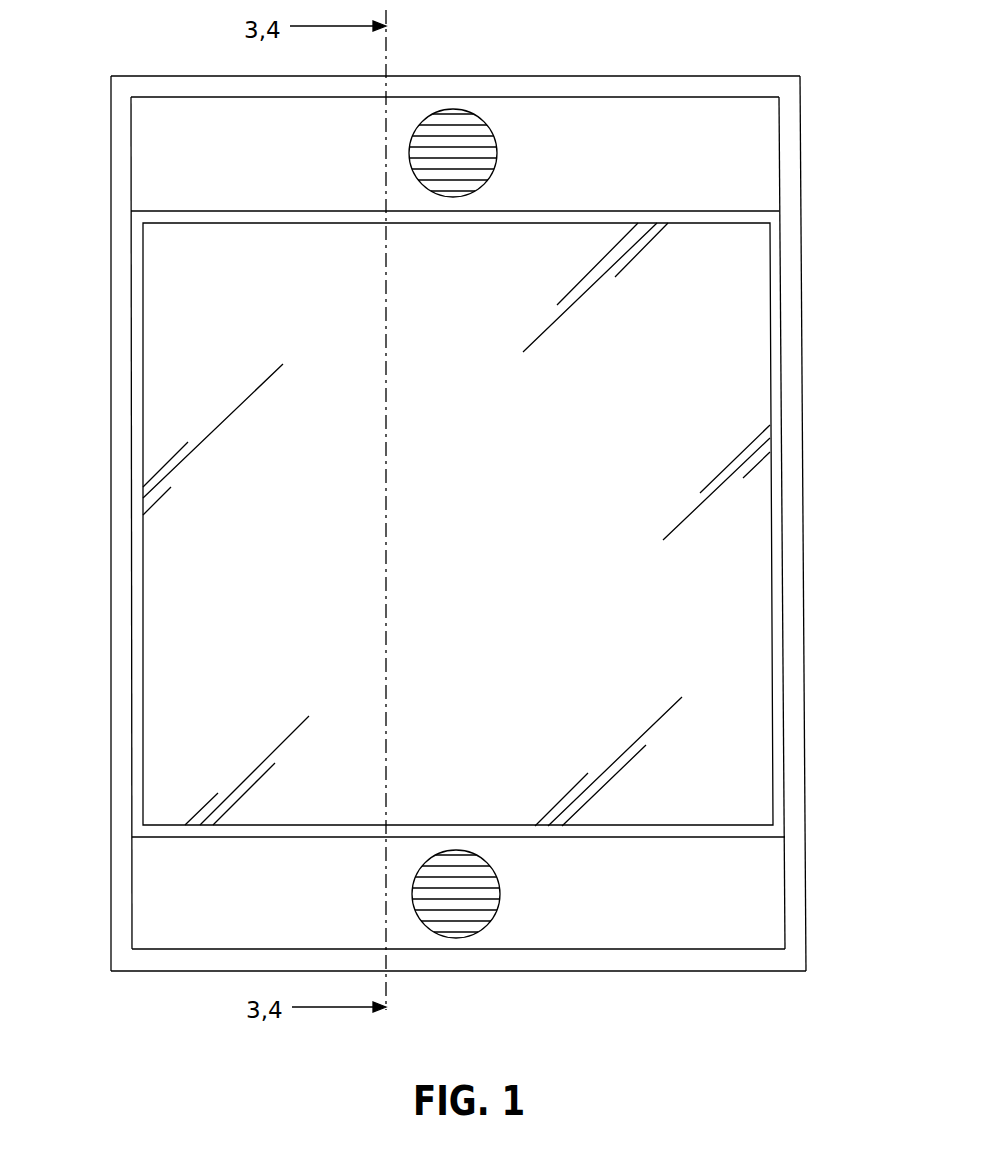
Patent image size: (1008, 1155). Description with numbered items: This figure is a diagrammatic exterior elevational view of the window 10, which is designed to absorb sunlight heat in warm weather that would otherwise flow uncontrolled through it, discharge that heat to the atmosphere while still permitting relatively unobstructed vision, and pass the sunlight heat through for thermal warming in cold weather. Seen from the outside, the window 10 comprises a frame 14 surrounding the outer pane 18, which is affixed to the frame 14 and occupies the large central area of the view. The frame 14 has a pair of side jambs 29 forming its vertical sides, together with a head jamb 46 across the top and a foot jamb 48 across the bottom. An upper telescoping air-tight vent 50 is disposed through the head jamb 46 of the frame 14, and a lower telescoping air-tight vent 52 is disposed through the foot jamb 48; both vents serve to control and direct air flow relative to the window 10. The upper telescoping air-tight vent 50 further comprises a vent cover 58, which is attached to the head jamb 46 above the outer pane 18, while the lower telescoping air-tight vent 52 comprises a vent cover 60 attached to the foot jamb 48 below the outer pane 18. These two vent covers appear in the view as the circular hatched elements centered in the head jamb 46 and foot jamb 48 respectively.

The window 10 is at (832, 226).
The frame 14 is at (806, 388).
The outer pane 18 is at (473, 473).
The side jambs 29 is at (804, 522).
The head jamb 46 is at (207, 118).
The foot jamb 48 is at (684, 920).
The upper telescoping air-tight vent 50 is at (459, 117).
The lower telescoping air-tight vent 52 is at (482, 900).
The vent cover 58 is at (476, 135).
The vent cover 60 is at (453, 933).